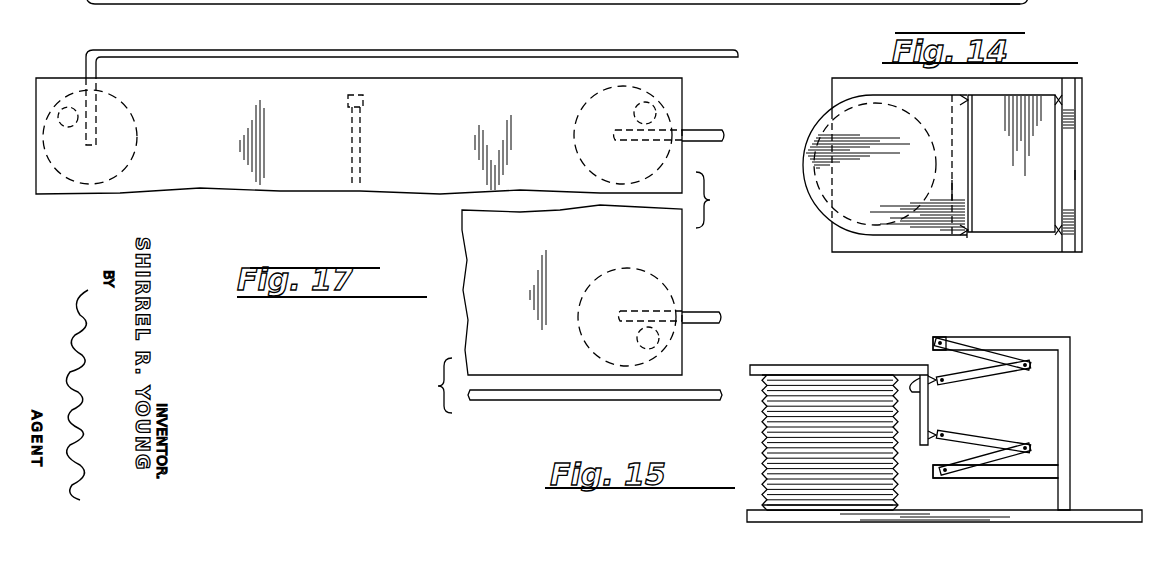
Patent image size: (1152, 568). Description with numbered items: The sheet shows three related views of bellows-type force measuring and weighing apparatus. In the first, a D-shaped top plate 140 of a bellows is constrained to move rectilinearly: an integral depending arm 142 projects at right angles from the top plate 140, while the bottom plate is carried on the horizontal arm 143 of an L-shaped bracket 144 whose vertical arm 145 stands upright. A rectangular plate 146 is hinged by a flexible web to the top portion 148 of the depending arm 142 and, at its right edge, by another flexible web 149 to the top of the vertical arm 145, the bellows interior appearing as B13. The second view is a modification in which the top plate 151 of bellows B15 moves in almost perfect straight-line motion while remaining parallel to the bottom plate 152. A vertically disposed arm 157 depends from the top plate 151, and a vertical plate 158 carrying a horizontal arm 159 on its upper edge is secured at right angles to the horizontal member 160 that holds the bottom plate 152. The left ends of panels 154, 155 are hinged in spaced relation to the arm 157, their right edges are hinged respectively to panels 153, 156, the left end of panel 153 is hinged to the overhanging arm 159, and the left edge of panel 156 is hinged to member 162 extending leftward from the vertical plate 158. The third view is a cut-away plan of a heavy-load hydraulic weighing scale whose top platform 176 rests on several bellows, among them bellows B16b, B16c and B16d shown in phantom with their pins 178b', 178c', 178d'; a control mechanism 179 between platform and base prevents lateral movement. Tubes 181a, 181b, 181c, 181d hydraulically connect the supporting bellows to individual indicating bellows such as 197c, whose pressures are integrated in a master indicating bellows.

In FIG. 17, the top platform 176 is at (682, 266).
In FIG. 17, the control mechanism 179 is at (362, 162).
In FIG. 17, the tube 181a is at (783, 4).
In FIG. 17, the tube 181b is at (710, 313).
In FIG. 17, the rod 181c is at (357, 54).
In FIG. 17, the rod 181d is at (712, 143).
In FIG. 17, the pin 178b' is at (688, 351).
In FIG. 17, the pin 178c' is at (52, 86).
In FIG. 17, the pin 178d' is at (694, 100).
In FIG. 17, the supporting bellows B16b is at (672, 332).
In FIG. 17, the bore B16c is at (118, 175).
In FIG. 17, the bore B16d is at (655, 118).
In FIG. 14, the indicating bellows 197c is at (1040, 9).
In FIG. 14, the top plate 140 is at (807, 196).
In FIG. 14, the bore B13 is at (810, 197).
In FIG. 14, the depending arm 142 is at (957, 190).
In FIG. 14, the horizontal arm 143 is at (997, 245).
In FIG. 14, the L-shaped bracket 144 is at (1084, 238).
In FIG. 14, the vertical arm 145 is at (1068, 175).
In FIG. 14, the rectangular plate 146 is at (1026, 200).
In FIG. 14, the top portion 148 is at (968, 237).
In FIG. 14, the flexible web 149 is at (1062, 100).
In FIG. 15, the top plate 151 is at (838, 365).
In FIG. 15, the bottom plate 152 is at (795, 509).
In FIG. 15, the panel 153 is at (990, 355).
In FIG. 15, the panel 154 is at (988, 372).
In FIG. 15, the panel 155 is at (990, 443).
In FIG. 15, the panel 156 is at (993, 462).
In FIG. 15, the vertically disposed arm 157 is at (920, 366).
In FIG. 15, the vertical plate 158 is at (1070, 445).
In FIG. 15, the horizontal arm 159 is at (979, 341).
In FIG. 15, the horizontal member 160 is at (1055, 518).
In FIG. 15, the member 162 is at (1040, 470).
In FIG. 15, the bellows B15 is at (762, 417).